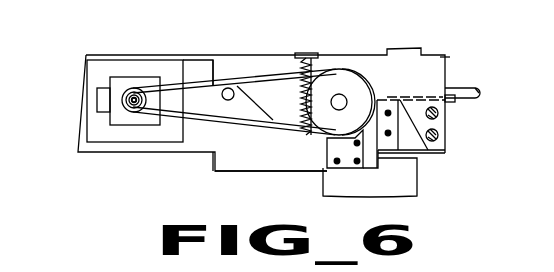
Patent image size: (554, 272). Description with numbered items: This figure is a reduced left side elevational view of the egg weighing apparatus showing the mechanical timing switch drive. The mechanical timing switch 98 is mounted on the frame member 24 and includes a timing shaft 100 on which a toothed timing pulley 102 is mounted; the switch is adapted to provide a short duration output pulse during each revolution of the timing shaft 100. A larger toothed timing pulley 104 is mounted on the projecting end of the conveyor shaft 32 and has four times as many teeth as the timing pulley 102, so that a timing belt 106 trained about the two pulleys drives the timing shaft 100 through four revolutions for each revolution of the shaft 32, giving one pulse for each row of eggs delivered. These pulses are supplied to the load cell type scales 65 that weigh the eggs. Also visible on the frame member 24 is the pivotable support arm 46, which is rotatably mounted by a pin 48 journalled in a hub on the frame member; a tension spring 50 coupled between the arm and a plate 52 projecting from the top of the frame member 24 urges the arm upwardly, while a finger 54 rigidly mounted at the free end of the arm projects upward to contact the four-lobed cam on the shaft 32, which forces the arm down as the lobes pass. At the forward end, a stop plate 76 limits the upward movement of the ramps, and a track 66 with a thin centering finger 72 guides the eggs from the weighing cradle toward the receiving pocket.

The frame member 24 is at (80, 150).
The mechanical timing switch 98 is at (110, 83).
The timing shaft 100 is at (134, 112).
The toothed timing pulley 102 is at (136, 88).
The toothed timing pulley 104 is at (305, 97).
The timing belt 106 is at (205, 122).
The support arm 46 is at (232, 168).
The pin 48 is at (230, 88).
The plate 52 is at (298, 53).
The tension spring 50 is at (313, 63).
The shaft 32 is at (343, 100).
The finger 54 is at (325, 159).
The scales 65 is at (410, 183).
The stop plate 76 is at (440, 132).
The finger 72 is at (479, 97).
The track 66 is at (479, 83).